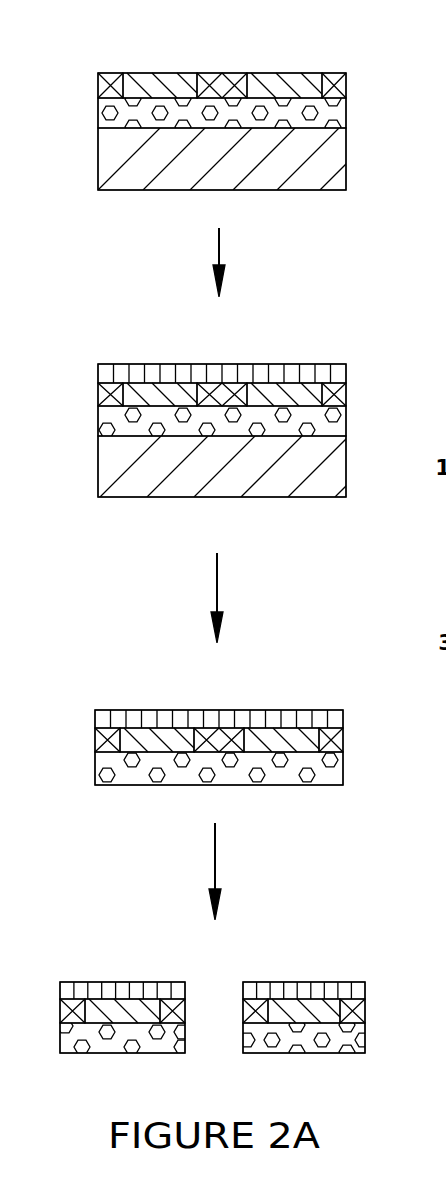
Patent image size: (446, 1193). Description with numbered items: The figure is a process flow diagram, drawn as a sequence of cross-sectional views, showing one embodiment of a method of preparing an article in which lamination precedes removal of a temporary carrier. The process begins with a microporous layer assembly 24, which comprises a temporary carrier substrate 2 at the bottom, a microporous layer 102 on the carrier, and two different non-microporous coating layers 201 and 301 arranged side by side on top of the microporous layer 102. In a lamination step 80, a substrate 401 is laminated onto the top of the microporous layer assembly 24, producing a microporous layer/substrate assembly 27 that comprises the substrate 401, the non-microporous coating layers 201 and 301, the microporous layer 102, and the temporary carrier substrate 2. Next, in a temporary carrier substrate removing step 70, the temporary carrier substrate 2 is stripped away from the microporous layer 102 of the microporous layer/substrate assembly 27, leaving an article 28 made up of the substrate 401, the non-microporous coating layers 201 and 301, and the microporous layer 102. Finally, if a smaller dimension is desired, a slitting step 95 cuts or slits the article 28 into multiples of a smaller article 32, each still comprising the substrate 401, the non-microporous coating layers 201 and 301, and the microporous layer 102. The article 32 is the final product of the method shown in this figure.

The temporary carrier substrate 2 is at (340, 178).
The microporous layer 102 is at (100, 118).
The non-microporous coating layer 201 is at (163, 77).
The non-microporous coating layer 301 is at (235, 73).
The substrate 401 is at (218, 372).
The microporous layer assembly 24 is at (222, 150).
The microporous layer/substrate assembly 27 is at (222, 453).
The article 28 is at (219, 767).
The article 32 is at (212, 1041).
The lamination step 80 is at (238, 262).
The temporary carrier substrate removing step 70 is at (236, 598).
The slitting step 95 is at (236, 871).